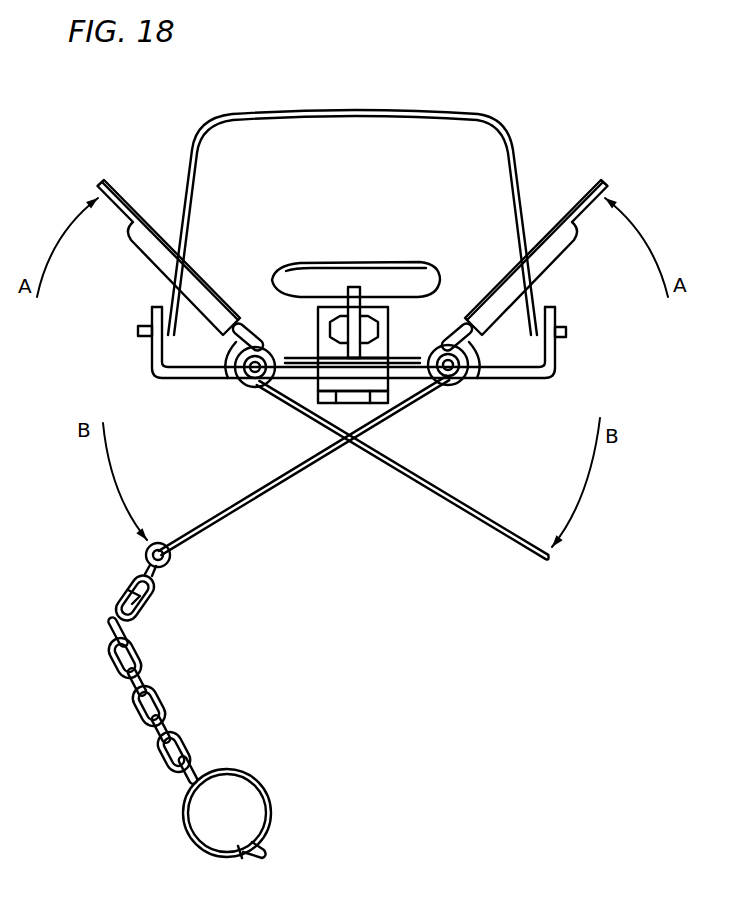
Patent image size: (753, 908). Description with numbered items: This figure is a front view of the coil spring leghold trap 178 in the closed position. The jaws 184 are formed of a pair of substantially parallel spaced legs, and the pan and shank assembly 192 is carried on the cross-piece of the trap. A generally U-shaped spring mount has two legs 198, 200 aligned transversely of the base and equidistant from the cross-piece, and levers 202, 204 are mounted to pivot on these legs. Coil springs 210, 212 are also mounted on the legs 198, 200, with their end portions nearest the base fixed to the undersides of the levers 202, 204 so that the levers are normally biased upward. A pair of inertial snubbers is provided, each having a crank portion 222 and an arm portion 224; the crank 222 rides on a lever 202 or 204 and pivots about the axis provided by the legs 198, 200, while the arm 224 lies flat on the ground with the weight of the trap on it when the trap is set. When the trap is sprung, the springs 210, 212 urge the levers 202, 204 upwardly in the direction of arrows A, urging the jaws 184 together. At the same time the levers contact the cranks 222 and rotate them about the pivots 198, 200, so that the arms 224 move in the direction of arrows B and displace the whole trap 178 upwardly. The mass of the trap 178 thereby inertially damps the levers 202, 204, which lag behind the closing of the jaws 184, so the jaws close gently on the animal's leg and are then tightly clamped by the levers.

The trap 178 is at (412, 88).
The jaws 184 is at (340, 113).
The pan and shank assembly 192 is at (390, 280).
The leg 198 is at (448, 386).
The leg 200 is at (251, 388).
The lever 202 is at (554, 246).
The lever 204 is at (152, 248).
The coil spring 210 is at (470, 386).
The coil spring 212 is at (240, 382).
The crank portion 222 is at (262, 328).
The arm portion 224 is at (240, 514).